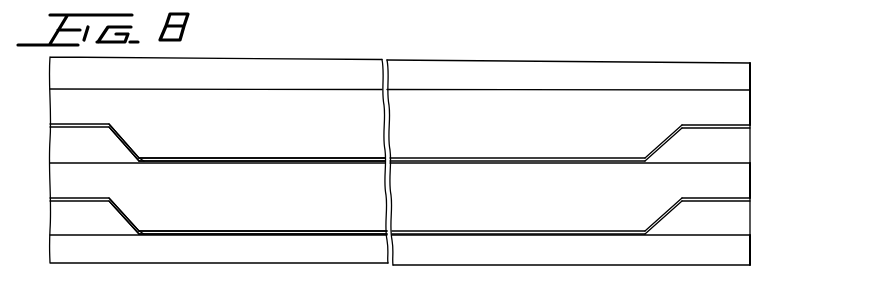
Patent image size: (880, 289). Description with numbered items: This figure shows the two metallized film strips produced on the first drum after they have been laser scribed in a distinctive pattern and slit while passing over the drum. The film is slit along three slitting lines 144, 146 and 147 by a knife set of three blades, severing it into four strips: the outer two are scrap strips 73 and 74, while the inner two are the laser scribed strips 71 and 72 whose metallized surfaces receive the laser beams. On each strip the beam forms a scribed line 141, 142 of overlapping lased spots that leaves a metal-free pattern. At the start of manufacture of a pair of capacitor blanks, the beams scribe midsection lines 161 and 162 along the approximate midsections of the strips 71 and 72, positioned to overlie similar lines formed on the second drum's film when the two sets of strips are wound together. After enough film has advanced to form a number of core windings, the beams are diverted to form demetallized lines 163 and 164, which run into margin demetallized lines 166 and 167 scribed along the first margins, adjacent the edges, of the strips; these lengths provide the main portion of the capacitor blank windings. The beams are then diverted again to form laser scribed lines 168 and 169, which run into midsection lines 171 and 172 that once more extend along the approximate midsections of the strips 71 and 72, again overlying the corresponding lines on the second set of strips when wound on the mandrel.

The slitting line 144 is at (88, 88).
The slitting line 146 is at (110, 162).
The slitting line 147 is at (88, 237).
The midsection scribed line 161 is at (77, 124).
The midsection scribed line 162 is at (72, 198).
The demetallized line 163 is at (122, 137).
The demetallized line 164 is at (122, 210).
The scribed line 141 is at (146, 147).
The scribed line 142 is at (142, 219).
The margin demetallized line 166 is at (280, 158).
The margin demetallized line 167 is at (285, 230).
The laser scribed line 168 is at (665, 143).
The laser scribed line 169 is at (660, 218).
The midsection scribed line 171 is at (692, 122).
The midsection scribed line 172 is at (711, 197).
The laser scribed strip 71 is at (754, 113).
The laser scribed strip 72 is at (750, 186).
The scrap strip 73 is at (749, 72).
The scrap strip 74 is at (750, 253).